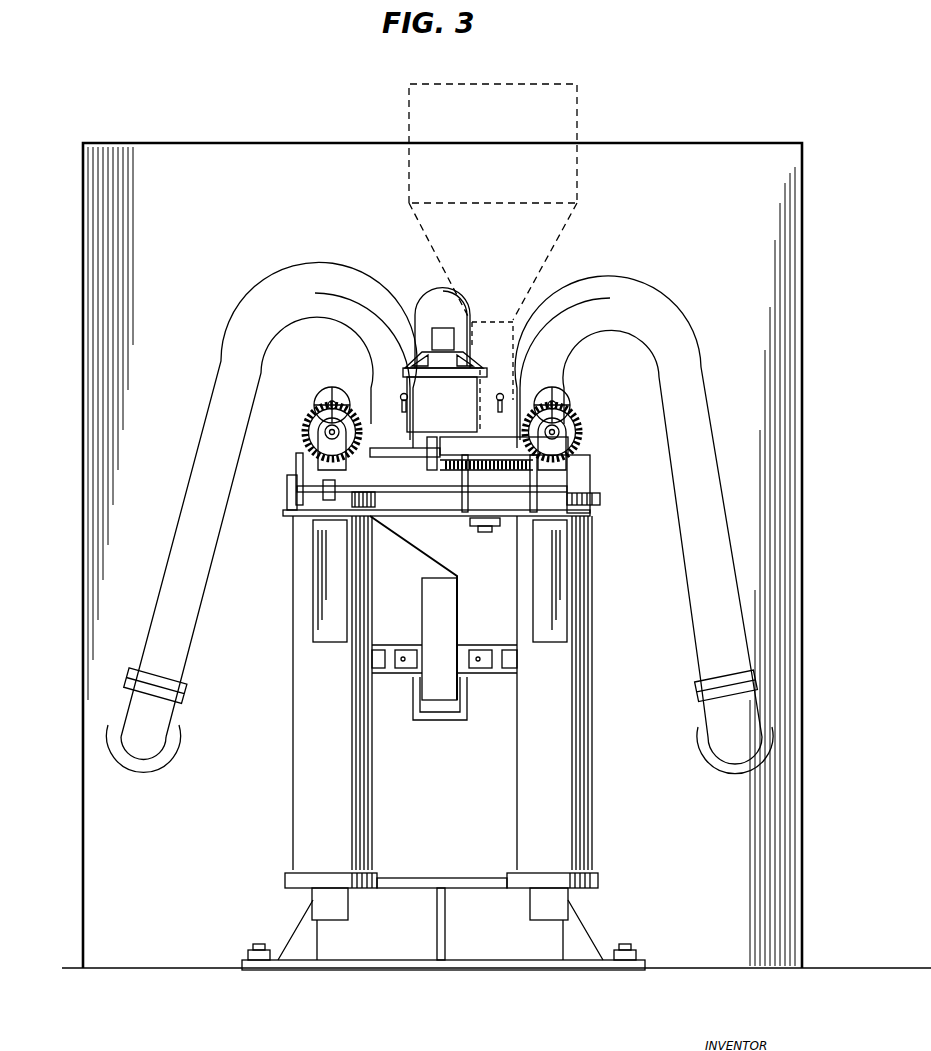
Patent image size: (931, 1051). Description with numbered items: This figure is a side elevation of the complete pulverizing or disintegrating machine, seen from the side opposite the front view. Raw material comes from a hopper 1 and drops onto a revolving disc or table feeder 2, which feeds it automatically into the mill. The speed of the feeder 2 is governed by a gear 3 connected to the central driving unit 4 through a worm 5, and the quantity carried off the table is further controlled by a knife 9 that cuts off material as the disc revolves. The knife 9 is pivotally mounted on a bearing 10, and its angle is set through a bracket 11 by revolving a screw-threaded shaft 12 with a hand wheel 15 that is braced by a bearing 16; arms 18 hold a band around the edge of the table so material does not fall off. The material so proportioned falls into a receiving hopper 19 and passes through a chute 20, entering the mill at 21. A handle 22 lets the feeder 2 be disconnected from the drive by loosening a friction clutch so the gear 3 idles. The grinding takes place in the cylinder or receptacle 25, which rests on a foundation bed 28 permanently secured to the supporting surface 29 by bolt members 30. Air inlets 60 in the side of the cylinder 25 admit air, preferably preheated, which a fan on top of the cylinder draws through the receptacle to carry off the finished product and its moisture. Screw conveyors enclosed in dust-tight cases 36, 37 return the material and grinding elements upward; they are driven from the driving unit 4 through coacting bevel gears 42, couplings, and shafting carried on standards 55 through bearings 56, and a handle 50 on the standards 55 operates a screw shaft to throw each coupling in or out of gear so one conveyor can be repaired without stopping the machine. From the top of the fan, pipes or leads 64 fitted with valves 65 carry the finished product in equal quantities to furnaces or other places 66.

The hopper 1 is at (565, 116).
The disc or table feeder 2 is at (497, 470).
The gear 3 is at (580, 487).
The central driving unit 4 is at (470, 340).
The worm 5 is at (447, 508).
The knife 9 is at (449, 440).
The bearing 10 is at (432, 462).
The bracket 11 is at (548, 468).
The shaft 12 is at (367, 523).
The hand wheel 15 is at (300, 488).
The bearing 16 is at (318, 513).
The arms 18 is at (578, 462).
The receiving hopper 19 is at (382, 458).
The chute 20 is at (450, 613).
The mill entrance 21 is at (443, 697).
The handle 22 is at (483, 524).
The cylinder or receptacle 25 is at (497, 810).
The foundation bed 28 is at (437, 912).
The supporting surface 29 is at (478, 972).
The bolt members 30 is at (264, 968).
The dust-tight case 36 is at (576, 726).
The dust-tight case 37 is at (298, 757).
The bevel gears 42 is at (300, 465).
The handle 50 is at (333, 390).
The standards 55 is at (578, 504).
The bearings 56 is at (318, 416).
The air inlets 60 is at (404, 662).
The pipes or leads 64 is at (434, 303).
The valves 65 is at (398, 393).
The furnaces or places 66 is at (440, 517).